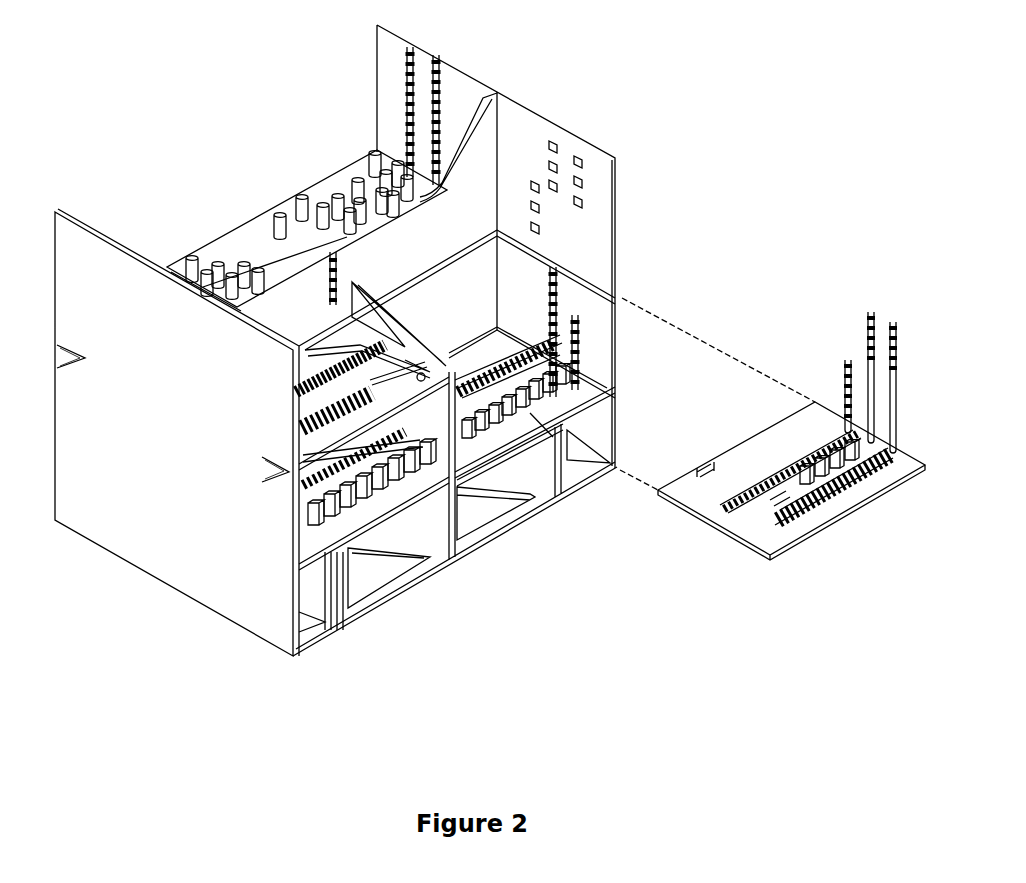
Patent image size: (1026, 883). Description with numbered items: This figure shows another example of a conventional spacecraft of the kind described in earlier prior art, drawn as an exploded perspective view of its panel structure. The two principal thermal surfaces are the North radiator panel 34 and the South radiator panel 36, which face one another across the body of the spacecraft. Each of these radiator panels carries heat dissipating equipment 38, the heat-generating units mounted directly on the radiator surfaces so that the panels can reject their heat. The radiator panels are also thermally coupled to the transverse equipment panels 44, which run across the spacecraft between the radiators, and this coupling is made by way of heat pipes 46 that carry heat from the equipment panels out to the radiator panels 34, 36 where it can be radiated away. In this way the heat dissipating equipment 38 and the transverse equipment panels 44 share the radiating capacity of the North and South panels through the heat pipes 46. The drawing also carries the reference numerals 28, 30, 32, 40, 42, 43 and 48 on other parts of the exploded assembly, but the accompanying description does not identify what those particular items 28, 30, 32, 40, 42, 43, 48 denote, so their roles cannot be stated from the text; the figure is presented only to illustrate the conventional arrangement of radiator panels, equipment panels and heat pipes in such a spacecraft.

The electronic equipment chassis 28 is at (38, 340).
The circuit card 30 is at (740, 532).
The frame 32 is at (415, 585).
The North radiator panel 34 is at (157, 545).
The South radiator panel 36 is at (540, 118).
The heat dissipating equipment 38 is at (583, 208).
The card connectors 40 is at (318, 520).
The upper rail 42 is at (443, 262).
The rear rail 43 is at (598, 276).
The transverse equipment panels 44 is at (762, 432).
The heat pipes 46 is at (560, 282).
The upper circuit board 48 is at (288, 262).